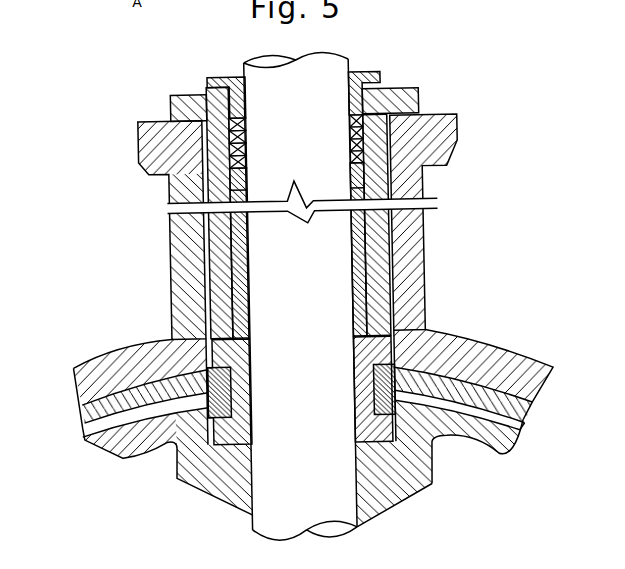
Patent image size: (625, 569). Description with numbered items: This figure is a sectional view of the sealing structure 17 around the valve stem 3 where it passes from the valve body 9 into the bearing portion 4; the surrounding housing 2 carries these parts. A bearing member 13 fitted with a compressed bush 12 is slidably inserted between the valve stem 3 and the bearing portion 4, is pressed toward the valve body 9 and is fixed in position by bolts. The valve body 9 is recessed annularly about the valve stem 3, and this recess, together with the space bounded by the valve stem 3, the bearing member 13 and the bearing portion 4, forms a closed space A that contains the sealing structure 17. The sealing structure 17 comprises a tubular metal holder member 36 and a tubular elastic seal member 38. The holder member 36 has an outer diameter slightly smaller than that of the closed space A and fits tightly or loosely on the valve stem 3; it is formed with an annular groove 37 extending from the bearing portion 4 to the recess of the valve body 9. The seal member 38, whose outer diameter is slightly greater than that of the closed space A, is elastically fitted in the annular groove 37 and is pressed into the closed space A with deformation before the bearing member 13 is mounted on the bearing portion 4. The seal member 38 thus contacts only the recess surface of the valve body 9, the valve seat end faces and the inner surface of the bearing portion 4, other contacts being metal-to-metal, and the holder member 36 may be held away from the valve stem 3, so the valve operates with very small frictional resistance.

The housing 2 is at (90, 361).
The valve stem 3 is at (334, 286).
The bearing portion 4 is at (170, 229).
The valve body 9 is at (431, 483).
The compressed bush 12 is at (235, 252).
The bearing member 13 is at (212, 301).
The sealing structure 17 is at (412, 454).
The holder member 36 is at (378, 352).
The annular groove 37 is at (374, 400).
The elastic seal member 38 is at (392, 372).
The closed space A is at (189, 431).